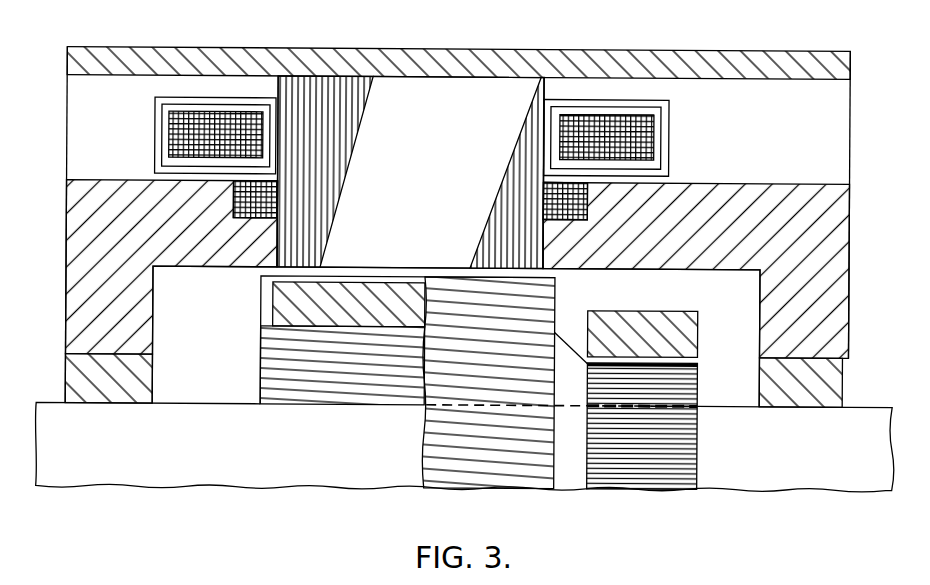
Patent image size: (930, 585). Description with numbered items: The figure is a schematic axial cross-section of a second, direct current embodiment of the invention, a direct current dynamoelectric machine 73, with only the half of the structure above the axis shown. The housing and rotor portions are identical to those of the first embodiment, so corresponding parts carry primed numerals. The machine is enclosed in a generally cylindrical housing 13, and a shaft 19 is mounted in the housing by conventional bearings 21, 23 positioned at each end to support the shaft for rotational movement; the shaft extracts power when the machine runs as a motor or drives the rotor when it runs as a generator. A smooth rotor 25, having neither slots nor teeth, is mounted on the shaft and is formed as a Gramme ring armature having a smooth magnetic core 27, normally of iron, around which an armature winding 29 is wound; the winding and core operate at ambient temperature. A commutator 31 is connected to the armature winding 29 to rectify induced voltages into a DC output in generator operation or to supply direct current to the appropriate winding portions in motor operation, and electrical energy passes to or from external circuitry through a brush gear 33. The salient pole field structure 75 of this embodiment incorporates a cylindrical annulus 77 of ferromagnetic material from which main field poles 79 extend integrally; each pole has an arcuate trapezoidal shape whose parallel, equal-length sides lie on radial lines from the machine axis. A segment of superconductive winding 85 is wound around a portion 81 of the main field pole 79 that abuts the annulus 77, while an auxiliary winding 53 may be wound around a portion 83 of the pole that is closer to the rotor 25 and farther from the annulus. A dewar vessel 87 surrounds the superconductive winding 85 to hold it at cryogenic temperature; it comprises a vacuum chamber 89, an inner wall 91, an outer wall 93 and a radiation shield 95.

The housing 13 is at (650, 62).
The salient pole field structure 75 is at (437, 76).
The cylindrical annulus 77 is at (495, 100).
The portion of main field pole 81 is at (313, 122).
The portion of field pole 83 is at (505, 231).
The vacuum chamber 89 is at (167, 123).
The superconductive winding 85 is at (195, 143).
The dewar vessel 87 is at (636, 131).
The inner wall 91 is at (615, 116).
The outer wall 93 is at (668, 163).
The radiation shield 95 is at (660, 152).
The main field pole 79 is at (273, 242).
The auxiliary winding 53 is at (575, 203).
The bearing 23 is at (72, 386).
The bearing 21 is at (832, 386).
The smooth magnetic core 27 is at (290, 297).
The smooth rotor 25 is at (262, 373).
The armature winding 29 is at (358, 391).
The brush gear 33 is at (643, 322).
The commutator 31 is at (678, 392).
The shaft 19 is at (786, 484).
The direct current dynamoelectric machine 73 is at (266, 538).